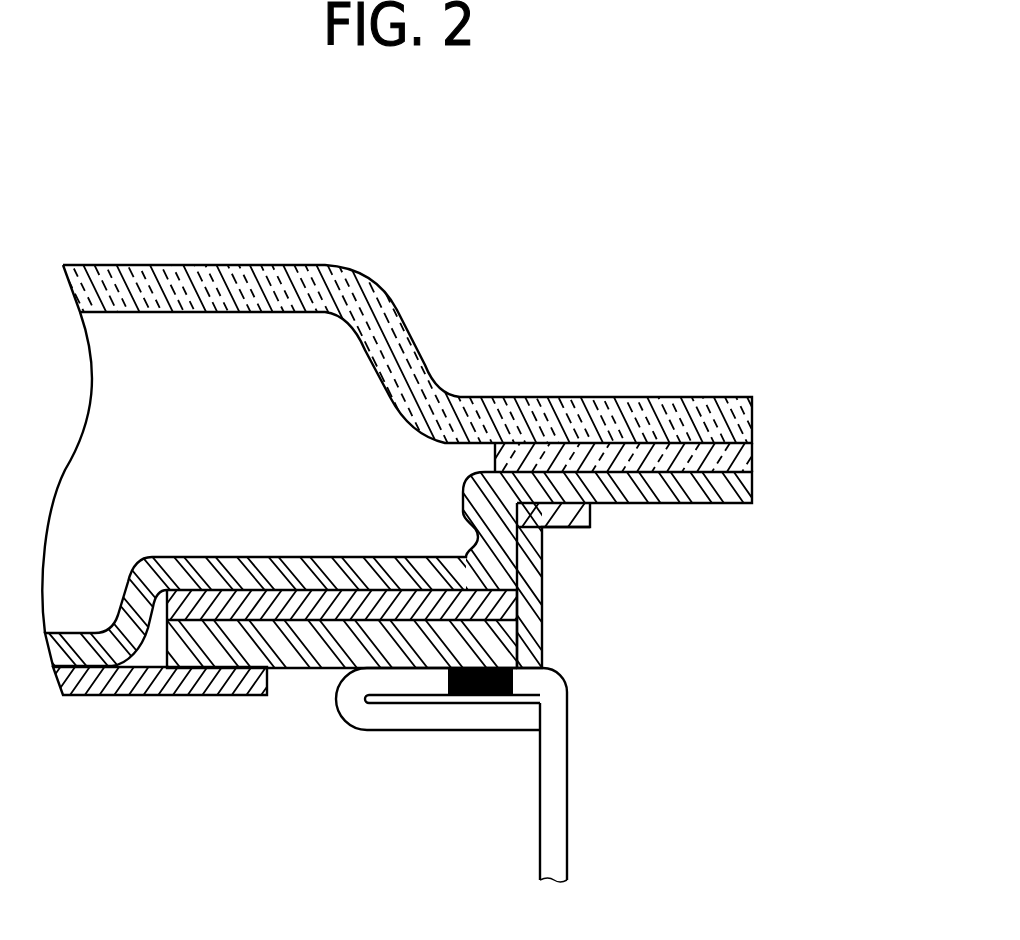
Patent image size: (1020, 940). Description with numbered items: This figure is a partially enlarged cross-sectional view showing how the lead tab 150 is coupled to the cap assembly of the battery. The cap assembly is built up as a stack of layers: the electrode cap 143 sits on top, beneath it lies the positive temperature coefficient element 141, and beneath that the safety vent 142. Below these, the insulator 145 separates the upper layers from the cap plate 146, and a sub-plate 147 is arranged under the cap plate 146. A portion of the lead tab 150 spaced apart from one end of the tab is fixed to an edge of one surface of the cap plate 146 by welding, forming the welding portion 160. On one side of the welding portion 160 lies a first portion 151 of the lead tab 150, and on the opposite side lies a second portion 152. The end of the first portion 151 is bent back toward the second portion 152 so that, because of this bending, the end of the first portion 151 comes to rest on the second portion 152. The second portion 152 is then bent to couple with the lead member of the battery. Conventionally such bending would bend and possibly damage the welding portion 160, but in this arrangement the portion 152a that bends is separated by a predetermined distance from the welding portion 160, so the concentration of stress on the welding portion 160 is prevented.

The positive temperature coefficient element 141 is at (740, 454).
The safety vent 142 is at (735, 488).
The electrode cap 143 is at (733, 414).
The insulator 145 is at (533, 568).
The cap plate 146 is at (503, 640).
The sub-plate 147 is at (142, 683).
The lead tab 150 is at (527, 767).
The first portion 151 is at (525, 718).
The second portion 152 is at (667, 707).
The bent portion 152a is at (568, 683).
The welding portion 160 is at (467, 695).